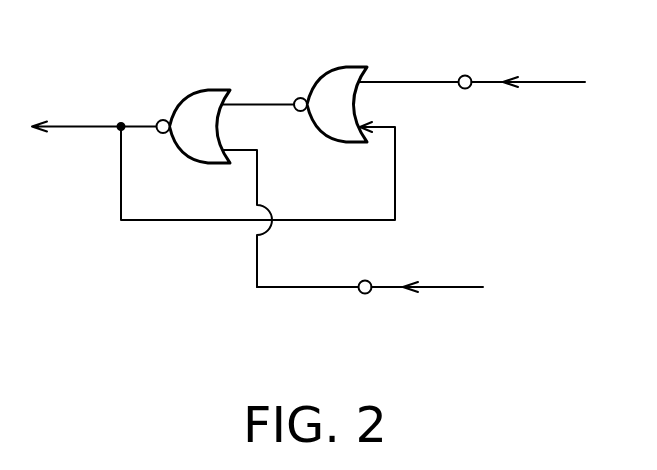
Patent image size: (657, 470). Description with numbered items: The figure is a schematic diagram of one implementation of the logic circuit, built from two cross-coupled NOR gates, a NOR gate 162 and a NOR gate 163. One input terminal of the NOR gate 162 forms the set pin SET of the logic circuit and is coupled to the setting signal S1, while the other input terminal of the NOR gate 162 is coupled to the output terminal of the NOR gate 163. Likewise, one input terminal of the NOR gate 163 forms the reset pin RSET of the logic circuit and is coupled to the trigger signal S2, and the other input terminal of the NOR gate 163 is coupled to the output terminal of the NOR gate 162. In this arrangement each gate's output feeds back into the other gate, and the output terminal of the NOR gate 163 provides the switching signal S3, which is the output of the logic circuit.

The NOR gate 162 is at (327, 75).
The NOR gate 163 is at (185, 97).
The setting signal S1 is at (529, 65).
The trigger signal S2 is at (428, 270).
The switching signal S3 is at (94, 108).
The set pin SET is at (415, 66).
The reset pin RSET is at (314, 271).